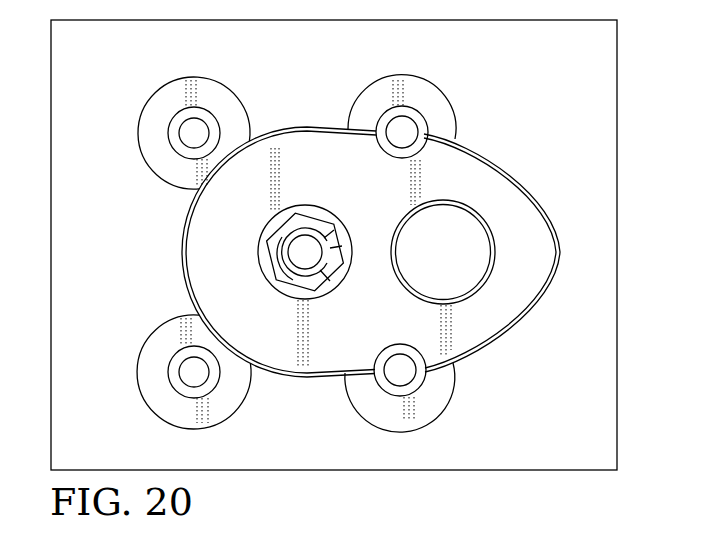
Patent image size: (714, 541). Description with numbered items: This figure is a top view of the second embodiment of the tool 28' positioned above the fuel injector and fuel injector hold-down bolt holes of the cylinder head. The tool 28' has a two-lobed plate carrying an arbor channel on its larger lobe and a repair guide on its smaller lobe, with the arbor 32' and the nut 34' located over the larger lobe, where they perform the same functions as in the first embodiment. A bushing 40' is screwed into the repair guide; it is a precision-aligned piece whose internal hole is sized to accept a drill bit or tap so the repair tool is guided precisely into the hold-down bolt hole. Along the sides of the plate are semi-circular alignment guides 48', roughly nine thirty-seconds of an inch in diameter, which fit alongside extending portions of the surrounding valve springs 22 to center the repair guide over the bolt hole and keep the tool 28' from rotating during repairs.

The valve springs 22 is at (180, 128).
The tool 28' is at (371, 292).
The arbor 32' is at (306, 185).
The nut 34' is at (239, 252).
The bushing 40' is at (491, 252).
The alignment guides 48' is at (387, 251).